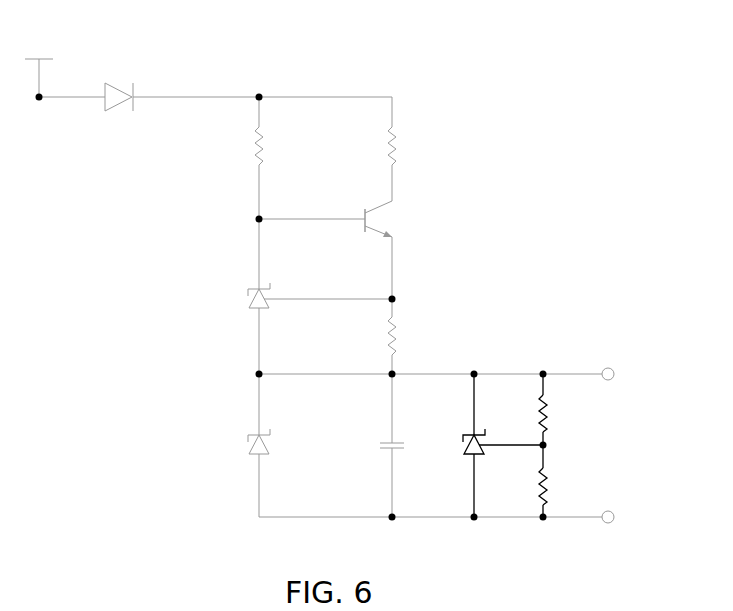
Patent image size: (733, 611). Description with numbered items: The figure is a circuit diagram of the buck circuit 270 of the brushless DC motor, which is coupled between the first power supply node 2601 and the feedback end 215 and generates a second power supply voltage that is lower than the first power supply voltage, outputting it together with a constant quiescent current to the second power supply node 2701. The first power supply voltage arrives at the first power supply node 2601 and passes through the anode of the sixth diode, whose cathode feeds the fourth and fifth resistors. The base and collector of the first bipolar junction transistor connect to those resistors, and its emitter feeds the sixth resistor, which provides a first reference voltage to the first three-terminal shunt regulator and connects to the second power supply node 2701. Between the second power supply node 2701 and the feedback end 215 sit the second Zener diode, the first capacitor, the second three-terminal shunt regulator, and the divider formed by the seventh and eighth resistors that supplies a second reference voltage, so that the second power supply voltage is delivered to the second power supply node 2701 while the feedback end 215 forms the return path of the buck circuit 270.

The buck circuit 270 is at (366, 296).
The first power supply node 2601 is at (39, 102).
The second power supply node 2701 is at (606, 367).
The feedback end 215 is at (609, 523).